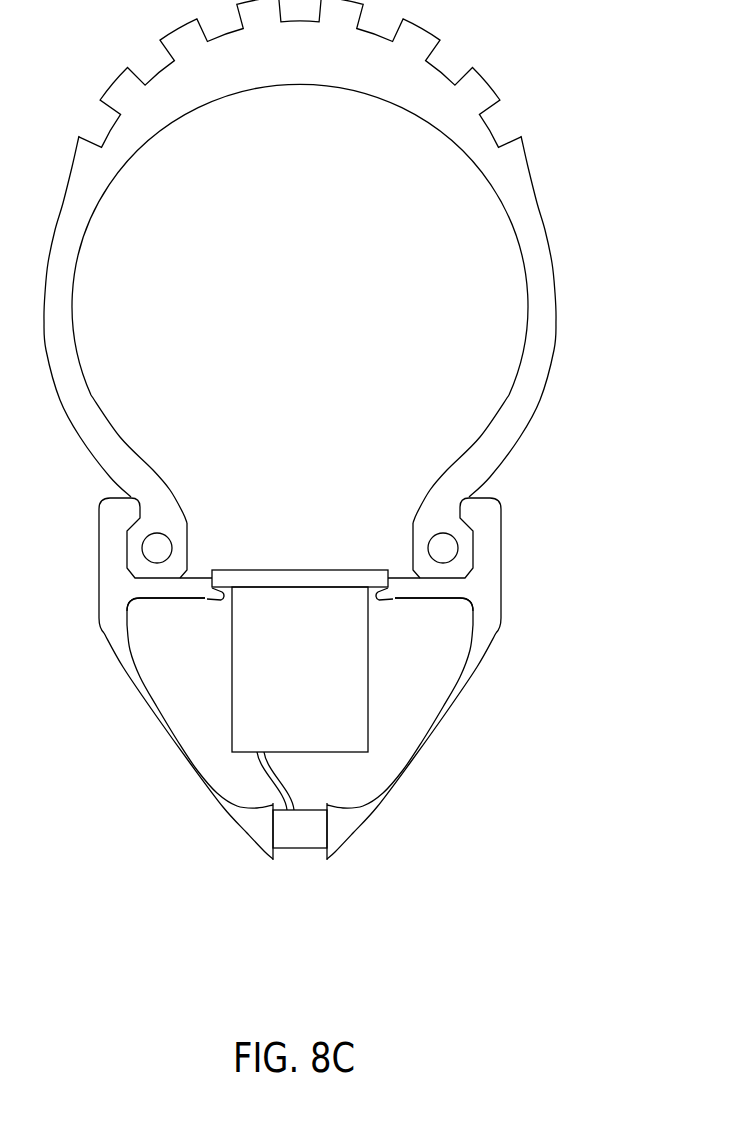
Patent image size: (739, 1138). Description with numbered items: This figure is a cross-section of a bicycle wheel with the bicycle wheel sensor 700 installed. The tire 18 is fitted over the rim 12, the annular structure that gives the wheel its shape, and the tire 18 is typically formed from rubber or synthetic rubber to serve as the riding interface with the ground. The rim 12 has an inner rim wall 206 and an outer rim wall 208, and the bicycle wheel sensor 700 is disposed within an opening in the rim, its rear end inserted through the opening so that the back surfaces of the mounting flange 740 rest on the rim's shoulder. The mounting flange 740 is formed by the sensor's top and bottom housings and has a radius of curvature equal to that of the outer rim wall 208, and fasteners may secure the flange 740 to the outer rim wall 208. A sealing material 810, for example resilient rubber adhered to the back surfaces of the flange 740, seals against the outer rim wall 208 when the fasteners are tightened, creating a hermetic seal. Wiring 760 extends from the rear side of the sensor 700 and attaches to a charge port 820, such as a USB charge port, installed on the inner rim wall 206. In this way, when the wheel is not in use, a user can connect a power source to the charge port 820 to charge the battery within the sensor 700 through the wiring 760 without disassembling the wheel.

The tire 18 is at (540, 205).
The rim 12 is at (473, 678).
The inner rim wall 206 is at (410, 778).
The outer rim wall 208 is at (203, 598).
The bicycle wheel sensor 700 is at (340, 654).
The mounting flange 740 is at (220, 580).
The wiring 760 is at (255, 775).
The sealing material 810 is at (213, 589).
The charge port 820 is at (308, 848).